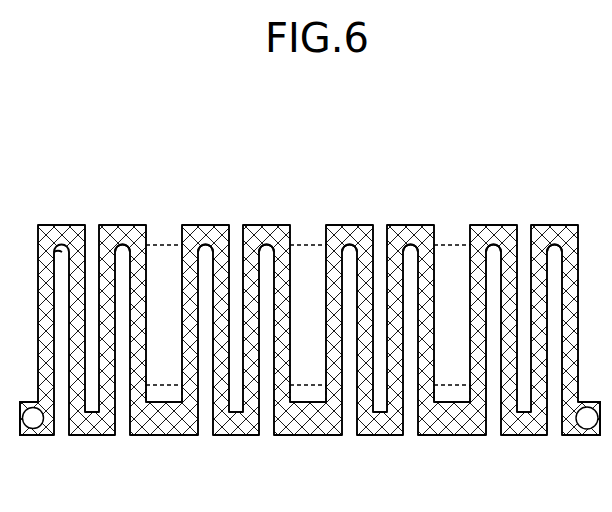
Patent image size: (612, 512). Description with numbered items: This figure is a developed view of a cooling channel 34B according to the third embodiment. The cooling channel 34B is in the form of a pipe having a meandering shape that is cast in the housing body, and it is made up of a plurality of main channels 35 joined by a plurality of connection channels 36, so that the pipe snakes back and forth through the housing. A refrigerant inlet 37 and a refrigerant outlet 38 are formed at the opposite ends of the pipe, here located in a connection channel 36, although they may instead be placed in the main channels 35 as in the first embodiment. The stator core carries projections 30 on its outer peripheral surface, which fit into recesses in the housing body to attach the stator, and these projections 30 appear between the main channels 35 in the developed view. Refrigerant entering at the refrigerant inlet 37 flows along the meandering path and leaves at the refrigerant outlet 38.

The cooling channel 34B is at (371, 217).
The main channel 35 is at (67, 226).
The connection channel 36 is at (173, 421).
The projection 30 is at (162, 243).
The refrigerant inlet 37 is at (587, 424).
The refrigerant outlet 38 is at (35, 424).